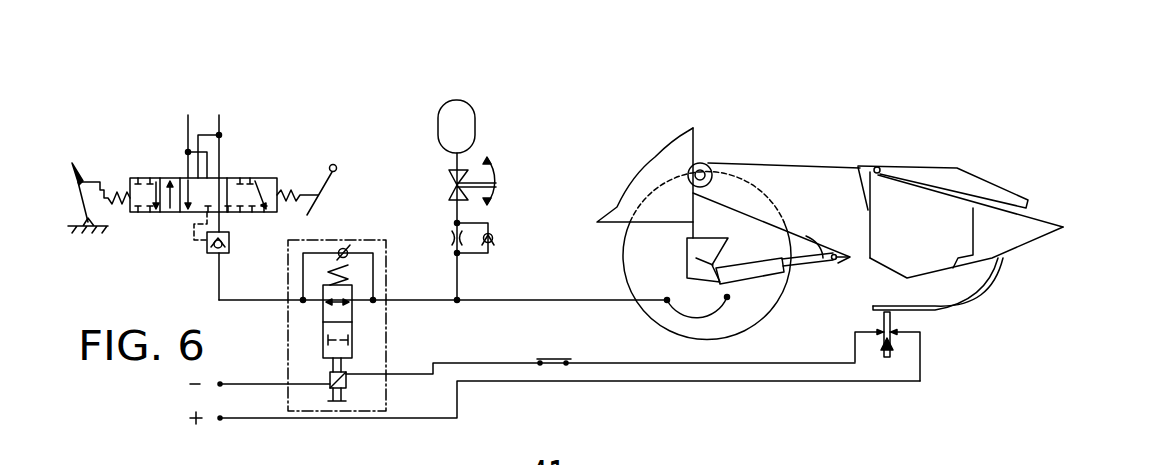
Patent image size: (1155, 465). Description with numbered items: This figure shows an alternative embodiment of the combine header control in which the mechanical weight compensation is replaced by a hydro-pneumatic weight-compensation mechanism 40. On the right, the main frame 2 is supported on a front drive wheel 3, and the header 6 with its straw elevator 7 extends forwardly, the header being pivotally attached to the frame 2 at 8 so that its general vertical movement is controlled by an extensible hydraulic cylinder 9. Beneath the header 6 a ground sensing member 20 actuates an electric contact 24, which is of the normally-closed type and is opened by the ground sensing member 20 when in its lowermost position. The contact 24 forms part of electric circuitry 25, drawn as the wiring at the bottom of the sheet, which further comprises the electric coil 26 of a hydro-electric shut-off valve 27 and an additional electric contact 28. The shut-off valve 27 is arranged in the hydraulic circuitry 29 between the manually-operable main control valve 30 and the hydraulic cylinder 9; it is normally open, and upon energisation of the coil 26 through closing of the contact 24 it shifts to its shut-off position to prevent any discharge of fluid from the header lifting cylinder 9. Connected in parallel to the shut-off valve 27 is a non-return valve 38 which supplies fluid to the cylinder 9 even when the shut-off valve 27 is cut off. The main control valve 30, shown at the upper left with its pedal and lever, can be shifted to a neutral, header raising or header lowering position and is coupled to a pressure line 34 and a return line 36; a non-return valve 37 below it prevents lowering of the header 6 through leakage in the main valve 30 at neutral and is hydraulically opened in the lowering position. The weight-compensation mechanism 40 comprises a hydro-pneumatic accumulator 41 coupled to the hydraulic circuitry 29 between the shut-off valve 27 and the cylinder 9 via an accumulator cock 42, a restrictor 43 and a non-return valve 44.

The main frame 2 is at (694, 145).
The front drive wheels 3 is at (625, 276).
The header 6 is at (1031, 264).
The straw elevator 7 is at (800, 165).
The pivot attachment 8 is at (712, 166).
The hydraulic cylinders 9 is at (770, 290).
The ground sensing members 20 is at (985, 290).
The electric contacts 24 is at (897, 347).
The electric circuitry 25 is at (785, 382).
The electric coil 26 is at (347, 385).
The hydro-electric shut-off valve 27 is at (353, 330).
The additional electric contact 28 is at (558, 358).
The hydraulic circuitry 29 is at (496, 300).
The main control valve 30 is at (255, 178).
The pressure line 34 is at (187, 128).
The return line 36 is at (220, 127).
The non-return valve 37 is at (207, 248).
The non-return valve 38 is at (341, 250).
The hydro-pneumatic weight-compensation mechanism 40 is at (499, 158).
The hydro-pneumatic accumulator 41 is at (477, 118).
The accumulator cock 42 is at (497, 185).
The restrictor 43 is at (452, 238).
The non-return valve 44 is at (494, 238).